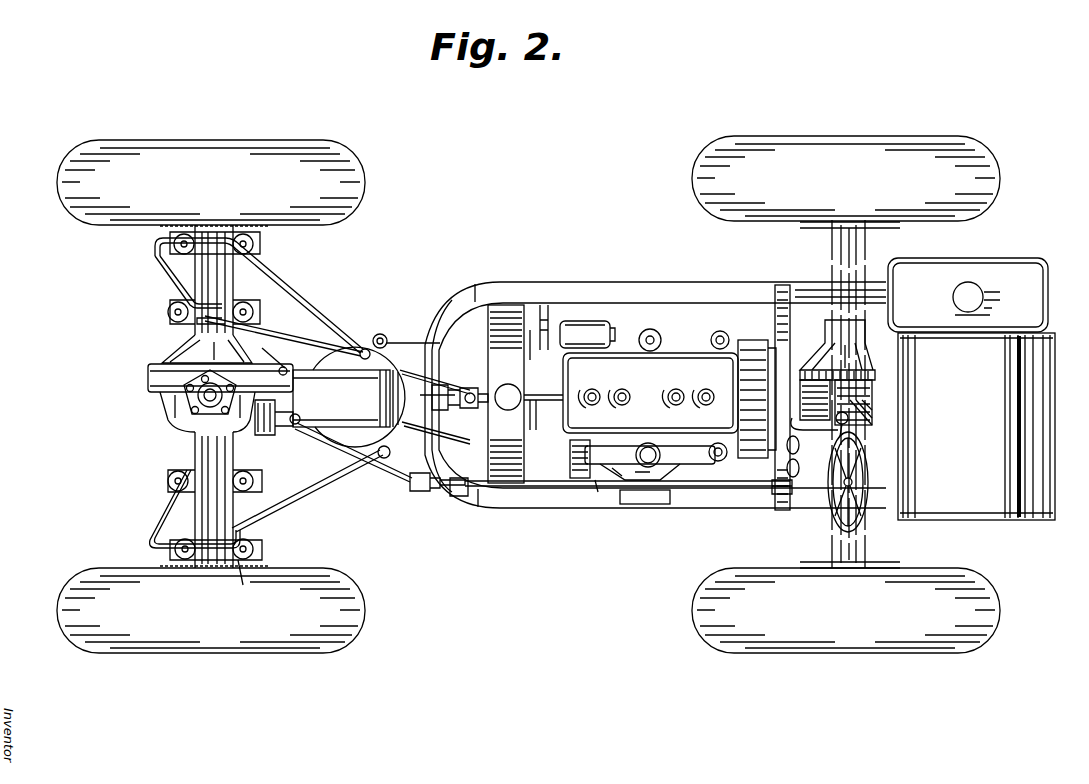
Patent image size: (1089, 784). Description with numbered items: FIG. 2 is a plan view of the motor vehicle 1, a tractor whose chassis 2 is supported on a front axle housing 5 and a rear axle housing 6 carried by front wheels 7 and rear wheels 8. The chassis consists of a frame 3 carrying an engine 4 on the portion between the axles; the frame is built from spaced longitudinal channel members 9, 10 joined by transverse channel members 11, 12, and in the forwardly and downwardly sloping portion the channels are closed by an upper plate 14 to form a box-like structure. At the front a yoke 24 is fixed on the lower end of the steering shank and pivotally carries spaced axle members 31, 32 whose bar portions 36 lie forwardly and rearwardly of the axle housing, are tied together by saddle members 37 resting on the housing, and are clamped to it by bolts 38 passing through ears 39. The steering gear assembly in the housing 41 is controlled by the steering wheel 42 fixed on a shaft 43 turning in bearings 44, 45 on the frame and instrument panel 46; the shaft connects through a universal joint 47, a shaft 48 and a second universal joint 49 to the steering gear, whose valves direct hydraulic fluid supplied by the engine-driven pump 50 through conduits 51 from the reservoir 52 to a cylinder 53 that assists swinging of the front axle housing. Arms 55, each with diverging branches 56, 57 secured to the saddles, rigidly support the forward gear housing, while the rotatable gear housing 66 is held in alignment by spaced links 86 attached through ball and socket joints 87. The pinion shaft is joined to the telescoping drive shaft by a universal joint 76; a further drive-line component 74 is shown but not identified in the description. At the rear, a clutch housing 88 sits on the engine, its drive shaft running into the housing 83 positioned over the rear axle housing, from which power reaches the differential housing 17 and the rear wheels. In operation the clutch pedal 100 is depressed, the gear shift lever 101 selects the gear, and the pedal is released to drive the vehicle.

The motor vehicle 1 is at (445, 496).
The chassis 2 is at (835, 287).
The frame 3 is at (455, 285).
The engine 4 is at (625, 360).
The front axle housing 5 is at (205, 512).
The rear axle housing 6 is at (856, 540).
The front wheels 7 is at (350, 632).
The rear wheels 8 is at (727, 618).
The longitudinal channel member 9 is at (722, 490).
The longitudinal channel member 10 is at (695, 285).
The transverse channel member 11 is at (495, 308).
The transverse channel member 12 is at (878, 318).
The upper plate 14 is at (330, 350).
The housing 17 is at (858, 382).
The yoke 24 is at (160, 405).
The axle member 31 is at (178, 425).
The axle member 32 is at (267, 348).
The bar portions 36 is at (230, 520).
The saddle members 37 is at (240, 535).
The bolts 38 is at (255, 549).
The ears 39 is at (244, 585).
The steering gear housing 41 is at (150, 365).
The steering wheel 42 is at (866, 470).
The shaft 43 is at (600, 495).
The bearing 44 is at (470, 498).
The bearing 45 is at (780, 500).
The instrument panel 46 is at (775, 300).
The universal joint 47 is at (425, 490).
The shaft 48 is at (400, 480).
The universal joint 49 is at (300, 410).
The pump 50 is at (585, 438).
The conduits 51 is at (613, 460).
The reservoir 52 is at (647, 504).
The cylinder 53 is at (288, 367).
The arms 55 is at (310, 305).
The branch 56 is at (270, 322).
The branch 57 is at (280, 293).
The gear housing 66 is at (352, 345).
The propeller shaft 74 is at (462, 440).
The universal joint 76 is at (468, 385).
The housing 83 is at (800, 380).
The links 86 is at (420, 340).
The ball and socket joints 87 is at (385, 338).
The clutch housing 88 is at (755, 338).
The clutch pedal 100 is at (796, 475).
The gear shift lever 101 is at (850, 418).